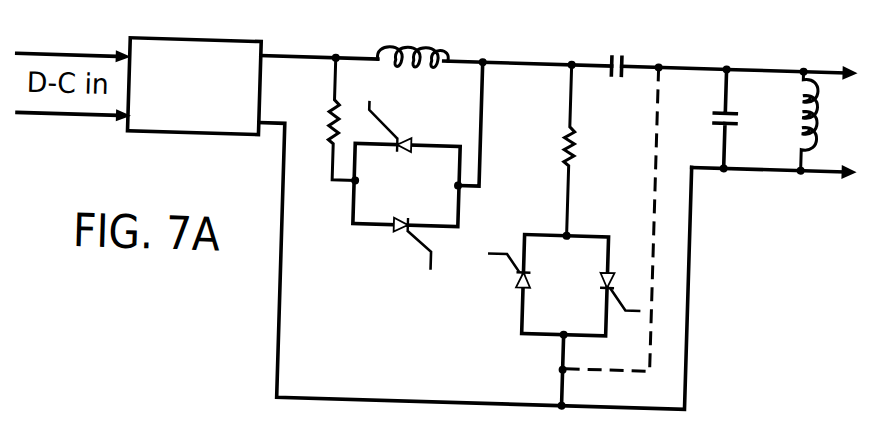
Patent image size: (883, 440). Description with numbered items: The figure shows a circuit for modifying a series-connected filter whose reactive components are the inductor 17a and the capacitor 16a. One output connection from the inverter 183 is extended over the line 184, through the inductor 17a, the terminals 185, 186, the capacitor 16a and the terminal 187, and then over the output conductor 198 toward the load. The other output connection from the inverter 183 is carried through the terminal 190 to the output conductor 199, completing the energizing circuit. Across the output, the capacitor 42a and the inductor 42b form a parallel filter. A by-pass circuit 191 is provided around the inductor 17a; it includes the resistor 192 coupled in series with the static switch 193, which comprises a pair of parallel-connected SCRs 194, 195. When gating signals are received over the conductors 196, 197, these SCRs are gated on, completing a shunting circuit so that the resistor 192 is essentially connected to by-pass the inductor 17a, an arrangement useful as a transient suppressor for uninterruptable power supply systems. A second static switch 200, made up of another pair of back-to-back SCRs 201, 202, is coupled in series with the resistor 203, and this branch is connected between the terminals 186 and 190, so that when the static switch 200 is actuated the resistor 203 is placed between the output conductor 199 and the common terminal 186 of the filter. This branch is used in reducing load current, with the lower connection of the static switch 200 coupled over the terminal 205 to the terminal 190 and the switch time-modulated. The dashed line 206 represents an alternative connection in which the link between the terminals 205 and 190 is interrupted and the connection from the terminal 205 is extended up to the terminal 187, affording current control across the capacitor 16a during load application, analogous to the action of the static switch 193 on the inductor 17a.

The inverter 183 is at (195, 72).
The line 184 is at (278, 60).
The inductor 17a is at (392, 49).
The terminal 185 is at (478, 57).
The terminal 186 is at (567, 58).
The capacitor 16a is at (606, 53).
The terminal 187 is at (659, 56).
The output conductor 198 is at (820, 57).
The output conductor 199 is at (821, 169).
The capacitor 42a is at (710, 100).
The inductor 42b is at (794, 122).
The resistor 192 is at (327, 126).
The static switch 193 is at (380, 199).
The SCR 194 is at (404, 136).
The SCR 195 is at (400, 236).
The conductor 196 is at (385, 103).
The conductor 197 is at (426, 266).
The by-pass circuit 191 is at (347, 278).
The resistor 203 is at (563, 142).
The static switch 200 is at (599, 290).
The SCR 201 is at (521, 279).
The SCR 202 is at (624, 278).
The terminal 205 is at (566, 366).
The terminal 190 is at (568, 402).
The dashed line 206 is at (653, 162).